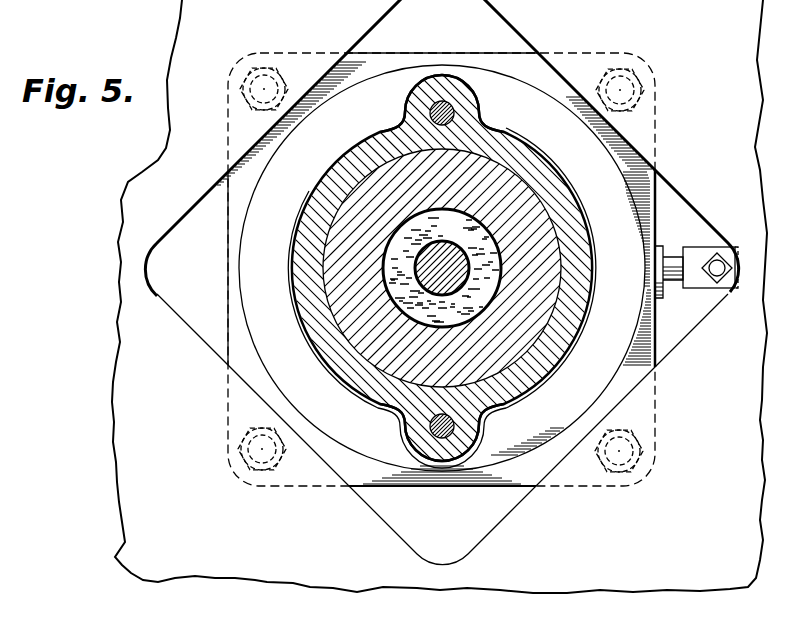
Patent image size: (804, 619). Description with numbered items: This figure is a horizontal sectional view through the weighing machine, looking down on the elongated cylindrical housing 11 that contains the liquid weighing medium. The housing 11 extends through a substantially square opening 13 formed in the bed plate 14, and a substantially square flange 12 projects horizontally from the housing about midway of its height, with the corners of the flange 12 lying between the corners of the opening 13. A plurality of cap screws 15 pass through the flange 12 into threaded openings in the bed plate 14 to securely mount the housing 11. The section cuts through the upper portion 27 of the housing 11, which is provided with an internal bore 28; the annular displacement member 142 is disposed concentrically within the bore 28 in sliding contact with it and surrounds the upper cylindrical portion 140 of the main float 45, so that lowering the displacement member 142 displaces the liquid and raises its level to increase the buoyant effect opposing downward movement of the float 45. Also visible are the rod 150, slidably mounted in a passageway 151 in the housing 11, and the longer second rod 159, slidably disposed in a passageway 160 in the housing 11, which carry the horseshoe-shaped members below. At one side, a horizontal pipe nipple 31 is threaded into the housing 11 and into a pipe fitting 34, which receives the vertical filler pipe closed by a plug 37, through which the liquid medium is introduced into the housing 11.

The housing 11 is at (575, 188).
The flange 12 is at (656, 328).
The opening 13 is at (507, 22).
The bed plate 14 is at (118, 404).
The cap screws 15 is at (268, 72).
The upper portion 27 is at (573, 350).
The internal bore 28 is at (524, 357).
The pipe nipple 31 is at (672, 255).
The pipe fitting 34 is at (708, 289).
The plug 37 is at (718, 258).
The main float 45 is at (423, 290).
The upper cylindrical portion 140 is at (446, 245).
The annular displacement member 142 is at (563, 250).
The rod 150 is at (447, 117).
The passageway 151 is at (431, 111).
The second rod 159 is at (431, 429).
The passageway 160 is at (455, 426).